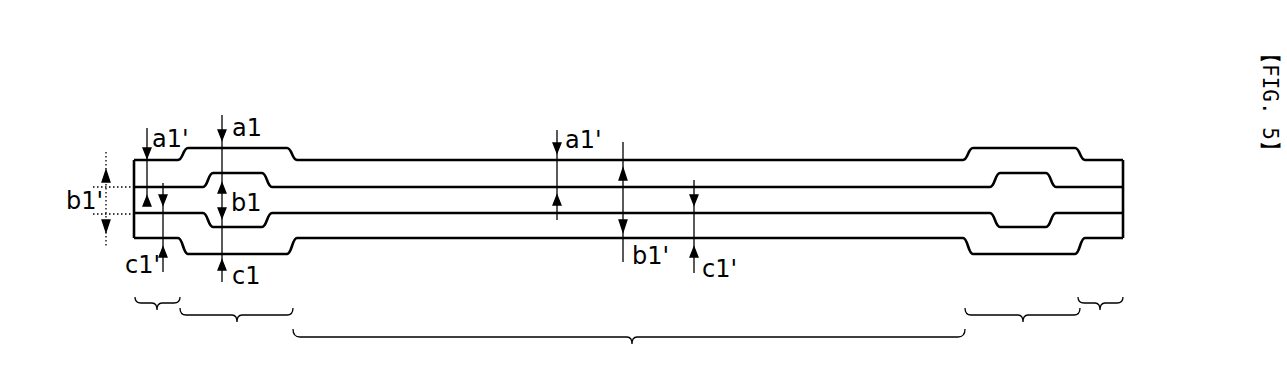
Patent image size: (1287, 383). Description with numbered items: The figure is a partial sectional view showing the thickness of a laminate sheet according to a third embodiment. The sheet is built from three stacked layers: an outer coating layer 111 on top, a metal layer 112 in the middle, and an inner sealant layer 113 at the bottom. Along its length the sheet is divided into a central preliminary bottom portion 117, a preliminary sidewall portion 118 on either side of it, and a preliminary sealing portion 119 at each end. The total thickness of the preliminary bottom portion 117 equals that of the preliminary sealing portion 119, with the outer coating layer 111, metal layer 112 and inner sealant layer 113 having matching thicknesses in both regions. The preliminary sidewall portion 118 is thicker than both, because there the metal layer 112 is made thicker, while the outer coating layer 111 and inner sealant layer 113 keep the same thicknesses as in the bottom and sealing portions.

The outer coating layer 111 is at (1107, 170).
The metal layer 112 is at (1107, 198).
The inner sealant layer 113 is at (1103, 222).
The preliminary bottom portion 117 is at (629, 351).
The preliminary sidewall portion 118 is at (630, 333).
The preliminary sealing portion 119 is at (631, 319).